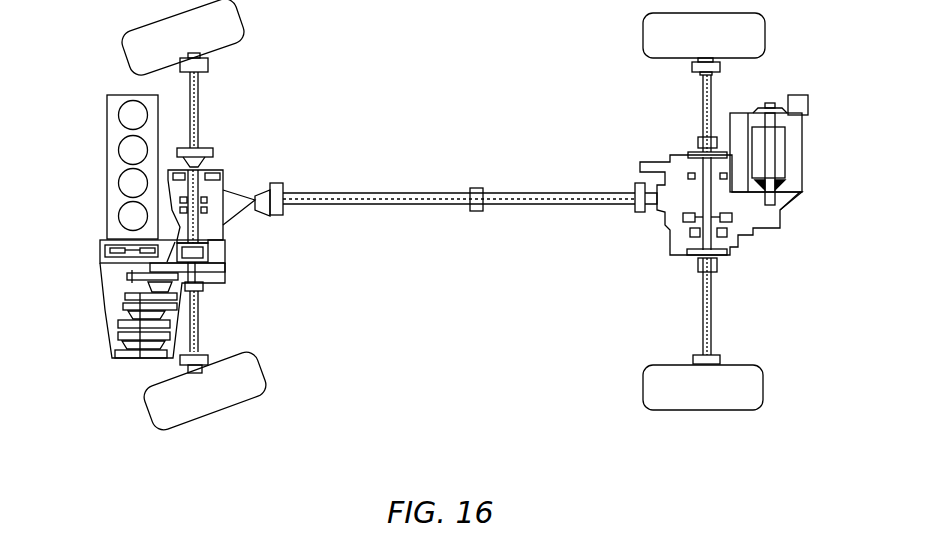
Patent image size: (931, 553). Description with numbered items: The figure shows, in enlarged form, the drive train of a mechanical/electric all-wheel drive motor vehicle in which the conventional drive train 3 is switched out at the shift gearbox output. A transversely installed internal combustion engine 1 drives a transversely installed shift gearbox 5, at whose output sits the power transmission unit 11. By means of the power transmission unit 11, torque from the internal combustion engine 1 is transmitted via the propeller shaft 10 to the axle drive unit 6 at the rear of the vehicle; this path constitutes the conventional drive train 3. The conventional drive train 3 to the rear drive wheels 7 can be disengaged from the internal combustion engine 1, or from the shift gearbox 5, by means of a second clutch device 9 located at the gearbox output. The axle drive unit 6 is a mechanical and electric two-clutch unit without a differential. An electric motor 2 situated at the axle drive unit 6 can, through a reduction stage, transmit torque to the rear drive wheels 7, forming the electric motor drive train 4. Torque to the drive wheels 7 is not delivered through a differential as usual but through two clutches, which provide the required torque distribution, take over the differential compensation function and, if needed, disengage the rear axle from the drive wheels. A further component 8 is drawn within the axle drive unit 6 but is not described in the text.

The internal combustion engine 1 is at (112, 163).
The electric motor 2 is at (777, 110).
The conventional drive train 3 is at (346, 172).
The electric motor drive train 4 is at (744, 251).
The shift gearbox 5 is at (111, 358).
The axle drive unit 6 is at (708, 195).
The rear drive wheels 7 is at (682, 398).
The rear differential gear 8 is at (690, 231).
The second clutch device 9 is at (205, 210).
The propeller shaft 10 is at (547, 201).
The power transmission unit 11 is at (233, 173).